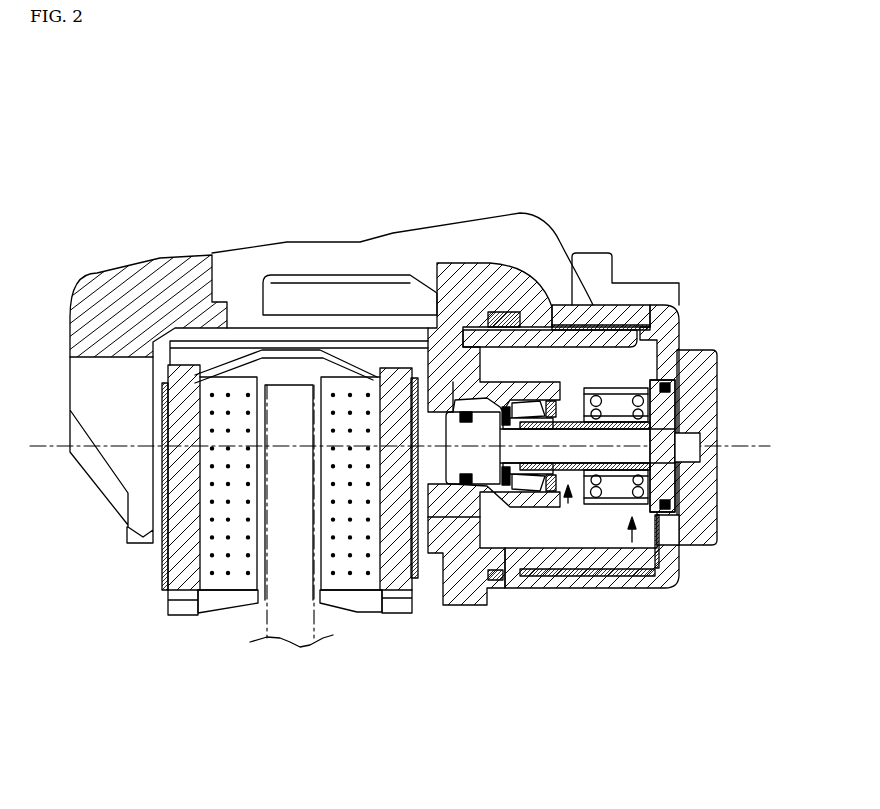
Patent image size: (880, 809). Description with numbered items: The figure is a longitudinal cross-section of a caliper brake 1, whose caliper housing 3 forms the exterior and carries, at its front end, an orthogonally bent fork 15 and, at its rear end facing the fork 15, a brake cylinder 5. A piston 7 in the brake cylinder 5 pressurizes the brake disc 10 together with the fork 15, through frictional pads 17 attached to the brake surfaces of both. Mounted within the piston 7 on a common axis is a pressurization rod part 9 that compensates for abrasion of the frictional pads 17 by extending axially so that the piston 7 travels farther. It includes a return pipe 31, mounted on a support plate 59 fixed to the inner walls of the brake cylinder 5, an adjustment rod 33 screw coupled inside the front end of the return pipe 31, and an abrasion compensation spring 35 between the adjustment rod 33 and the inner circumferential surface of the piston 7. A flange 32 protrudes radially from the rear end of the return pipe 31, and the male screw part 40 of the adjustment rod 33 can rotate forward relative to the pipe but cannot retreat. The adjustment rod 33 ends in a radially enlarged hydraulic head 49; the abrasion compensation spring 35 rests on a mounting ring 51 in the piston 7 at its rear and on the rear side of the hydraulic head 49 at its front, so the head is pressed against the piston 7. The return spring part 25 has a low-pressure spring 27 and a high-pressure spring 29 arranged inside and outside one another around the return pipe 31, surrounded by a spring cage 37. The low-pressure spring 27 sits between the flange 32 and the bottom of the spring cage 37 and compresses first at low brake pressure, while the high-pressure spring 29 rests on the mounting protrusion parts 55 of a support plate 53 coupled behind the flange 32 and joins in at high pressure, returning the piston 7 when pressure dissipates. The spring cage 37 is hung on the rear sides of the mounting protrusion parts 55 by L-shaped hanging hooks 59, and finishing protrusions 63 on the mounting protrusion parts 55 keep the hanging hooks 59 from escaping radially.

The caliper brake 1 is at (546, 118).
The caliper housing 3 is at (386, 220).
The brake cylinder 5 is at (560, 592).
The piston 7 is at (458, 545).
The pressurization rod part 9 is at (612, 590).
The brake disc 10 is at (290, 385).
The fork 15 is at (105, 480).
The frictional pads 17 is at (337, 580).
The return spring part 25 is at (640, 520).
The low-pressure spring 27 is at (606, 386).
The high-pressure spring 29 is at (578, 385).
The return pipe 31 is at (533, 327).
The flange 32 is at (654, 517).
The adjustment rod 33 is at (506, 594).
The abrasion compensation spring 35 is at (457, 318).
The spring cage 37 is at (632, 548).
The male screw part 40 is at (549, 400).
The hydraulic head 49 is at (395, 376).
The mounting ring 51 is at (526, 490).
The support plate 53 is at (717, 372).
The mounting protrusion parts 55 is at (645, 380).
The hanging hook 59 is at (668, 388).
The finishing protrusions 63 is at (689, 352).